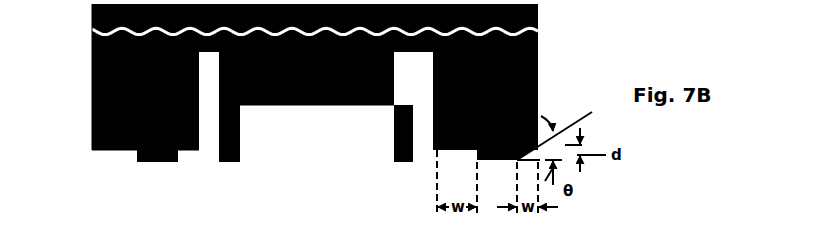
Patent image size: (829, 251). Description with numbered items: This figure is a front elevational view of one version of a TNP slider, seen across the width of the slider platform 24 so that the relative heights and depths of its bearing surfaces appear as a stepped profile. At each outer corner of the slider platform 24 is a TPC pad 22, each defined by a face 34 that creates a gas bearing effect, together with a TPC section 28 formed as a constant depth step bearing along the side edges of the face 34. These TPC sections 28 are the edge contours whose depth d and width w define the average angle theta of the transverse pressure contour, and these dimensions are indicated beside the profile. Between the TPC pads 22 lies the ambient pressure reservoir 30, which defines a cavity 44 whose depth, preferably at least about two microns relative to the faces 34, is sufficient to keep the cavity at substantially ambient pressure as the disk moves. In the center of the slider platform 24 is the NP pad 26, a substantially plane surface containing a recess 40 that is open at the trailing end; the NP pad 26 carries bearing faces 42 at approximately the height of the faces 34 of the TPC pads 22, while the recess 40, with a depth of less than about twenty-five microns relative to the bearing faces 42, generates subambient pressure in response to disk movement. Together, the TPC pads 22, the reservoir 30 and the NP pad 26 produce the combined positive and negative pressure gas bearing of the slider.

The TPC pad 22 is at (111, 165).
The slider platform 24 is at (538, 66).
The NP pad 26 is at (347, 152).
The TPC section 28 is at (188, 150).
The ambient pressure reservoir 30 is at (210, 139).
The face 34 is at (157, 162).
The recess 40 is at (313, 105).
The bearing face 42 is at (230, 163).
The cavity 44 is at (208, 120).